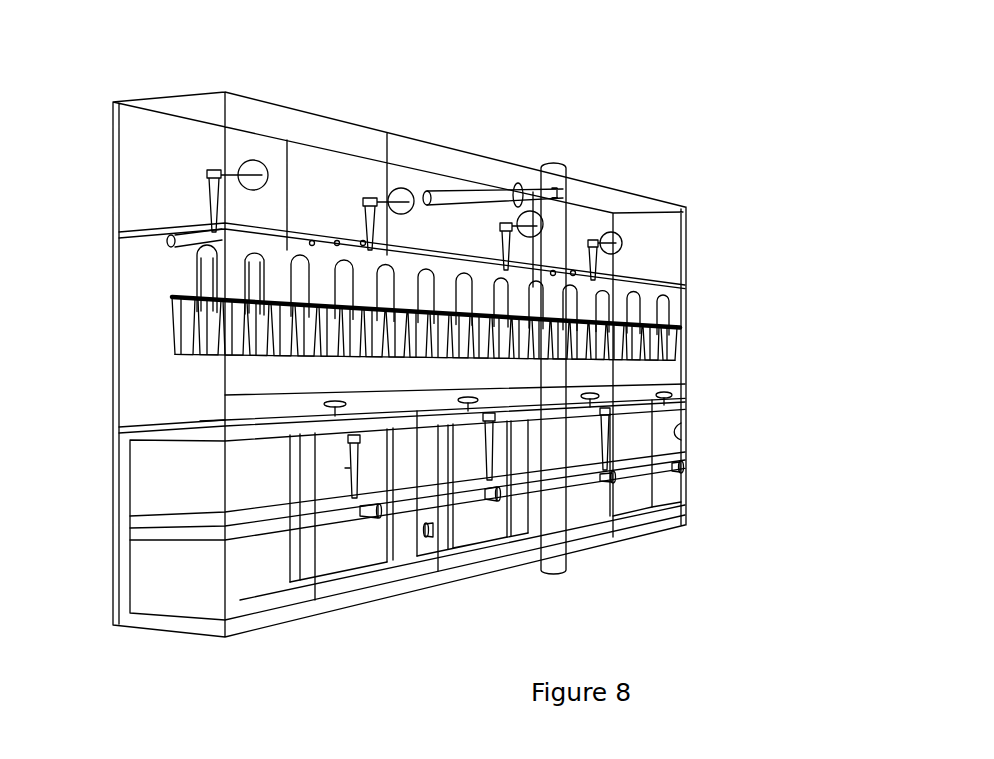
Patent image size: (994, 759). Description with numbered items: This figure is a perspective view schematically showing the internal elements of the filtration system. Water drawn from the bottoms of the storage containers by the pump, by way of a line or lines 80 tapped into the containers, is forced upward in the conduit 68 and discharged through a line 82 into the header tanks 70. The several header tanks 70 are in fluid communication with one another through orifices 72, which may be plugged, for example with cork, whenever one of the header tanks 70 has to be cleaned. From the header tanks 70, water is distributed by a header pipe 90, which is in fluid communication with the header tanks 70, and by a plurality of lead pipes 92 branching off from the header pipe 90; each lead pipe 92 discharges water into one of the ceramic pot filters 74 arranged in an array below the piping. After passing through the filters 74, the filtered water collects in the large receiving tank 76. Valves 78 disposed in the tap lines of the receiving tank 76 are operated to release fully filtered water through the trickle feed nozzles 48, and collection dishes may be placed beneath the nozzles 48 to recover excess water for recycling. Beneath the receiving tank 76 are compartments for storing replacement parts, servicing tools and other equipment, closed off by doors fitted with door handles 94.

The header tank 70 is at (186, 95).
The orifice 72 is at (363, 240).
The line 82 is at (450, 192).
The header pipe 90 is at (178, 243).
The lead pipe 92 is at (215, 270).
The ceramic pot filter 74 is at (347, 385).
The conduit 68 is at (568, 378).
The receiving tank 76 is at (200, 422).
The valve 78 is at (472, 398).
The door handle 94 is at (378, 512).
The line 80 is at (471, 540).
The trickle feed nozzle 48 is at (686, 436).